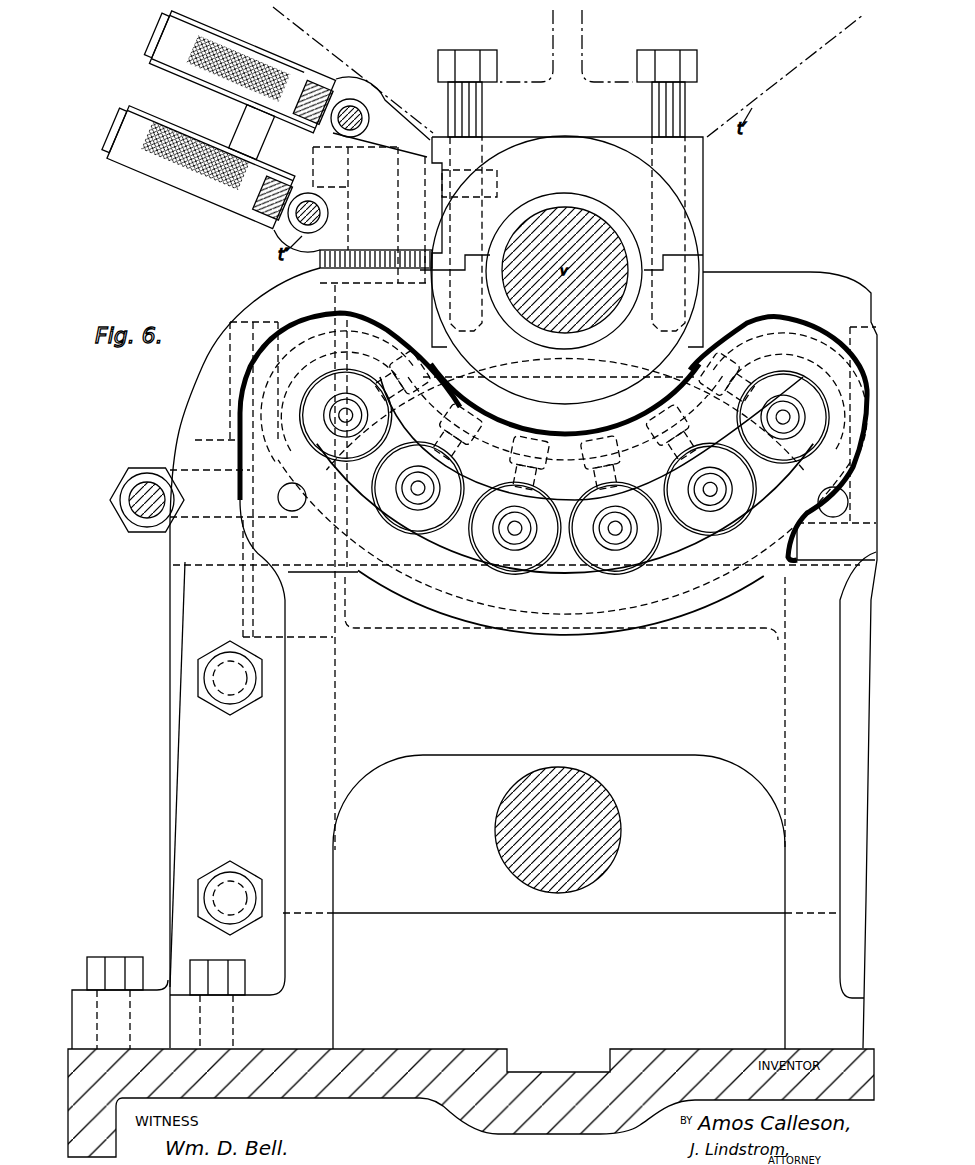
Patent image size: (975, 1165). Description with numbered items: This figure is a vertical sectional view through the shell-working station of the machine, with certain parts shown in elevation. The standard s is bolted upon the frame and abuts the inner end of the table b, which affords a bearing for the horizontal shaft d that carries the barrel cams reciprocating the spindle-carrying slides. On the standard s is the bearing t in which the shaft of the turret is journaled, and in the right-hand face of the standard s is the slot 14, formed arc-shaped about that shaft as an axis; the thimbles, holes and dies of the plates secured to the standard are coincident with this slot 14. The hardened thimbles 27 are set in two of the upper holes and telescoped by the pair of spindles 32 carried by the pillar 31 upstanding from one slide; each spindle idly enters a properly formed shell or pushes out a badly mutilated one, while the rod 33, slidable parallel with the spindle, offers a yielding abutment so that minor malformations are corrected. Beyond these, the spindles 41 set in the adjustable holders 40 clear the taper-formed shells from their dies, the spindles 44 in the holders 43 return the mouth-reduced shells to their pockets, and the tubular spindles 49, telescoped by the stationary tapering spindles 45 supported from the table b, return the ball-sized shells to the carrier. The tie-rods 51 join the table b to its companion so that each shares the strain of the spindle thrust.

The slot 14 is at (572, 566).
The hardened thimbles 27 is at (300, 228).
The pillar 31 is at (345, 302).
The spindles 32 is at (364, 134).
The rod 33 is at (272, 182).
The holders 40 is at (350, 424).
The spindles 41 is at (344, 426).
The holders 43 is at (610, 532).
The spindles 44 is at (612, 526).
The spindles 45 is at (782, 426).
The tubular spindles 49 is at (709, 480).
The tie-rods 51 is at (147, 517).
The bearing t is at (699, 263).
The standard s is at (185, 746).
The table b is at (170, 634).
The horizontal shaft d is at (558, 830).